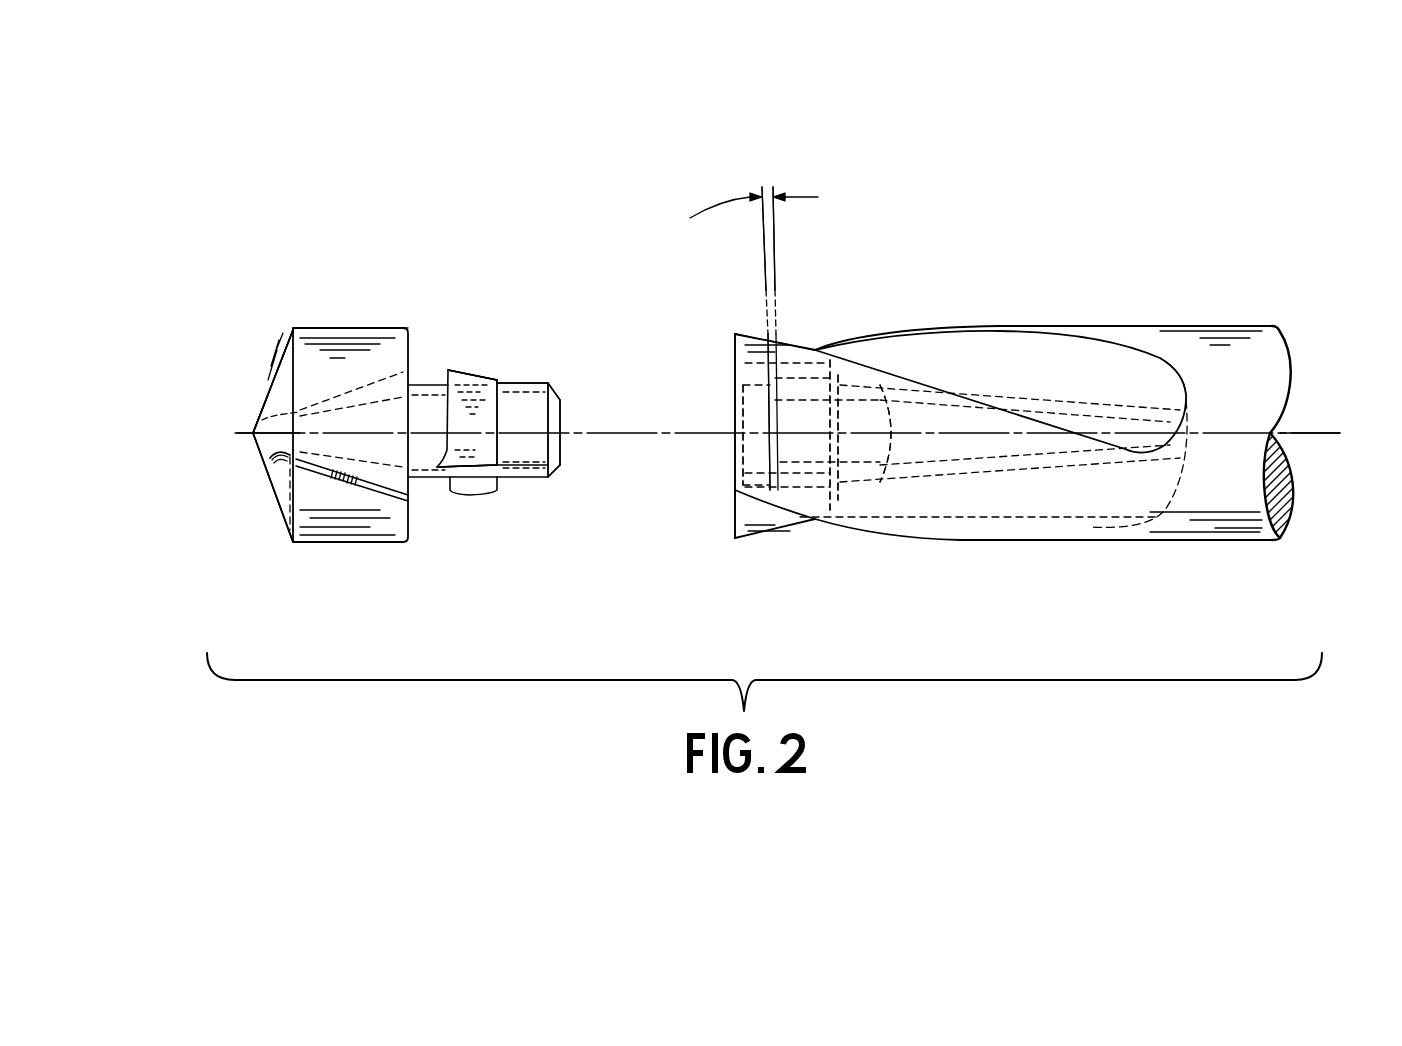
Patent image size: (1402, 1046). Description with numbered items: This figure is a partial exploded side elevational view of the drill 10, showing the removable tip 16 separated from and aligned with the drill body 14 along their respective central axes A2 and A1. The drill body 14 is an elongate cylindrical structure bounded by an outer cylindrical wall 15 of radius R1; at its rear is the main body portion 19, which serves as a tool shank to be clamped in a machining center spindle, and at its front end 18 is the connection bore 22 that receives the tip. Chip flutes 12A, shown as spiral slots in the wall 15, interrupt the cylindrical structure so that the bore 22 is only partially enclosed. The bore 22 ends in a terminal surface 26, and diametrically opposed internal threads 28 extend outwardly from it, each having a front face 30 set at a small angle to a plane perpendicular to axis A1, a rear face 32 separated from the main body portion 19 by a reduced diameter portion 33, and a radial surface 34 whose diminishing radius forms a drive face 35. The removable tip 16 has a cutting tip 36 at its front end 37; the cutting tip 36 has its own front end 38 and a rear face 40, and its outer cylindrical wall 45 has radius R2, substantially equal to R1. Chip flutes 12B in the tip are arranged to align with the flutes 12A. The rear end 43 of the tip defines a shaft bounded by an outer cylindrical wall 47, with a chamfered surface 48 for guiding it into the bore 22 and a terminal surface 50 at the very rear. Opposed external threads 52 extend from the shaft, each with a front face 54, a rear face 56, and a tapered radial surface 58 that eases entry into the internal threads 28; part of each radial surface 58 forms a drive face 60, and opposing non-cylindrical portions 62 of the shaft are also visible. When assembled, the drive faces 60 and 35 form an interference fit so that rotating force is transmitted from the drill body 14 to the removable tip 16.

The drill 10 is at (310, 172).
The chip flutes 12A is at (1042, 370).
The chip flutes 12B is at (262, 332).
The drill body 14 is at (1206, 193).
The outer cylindrical wall 15 is at (1207, 520).
The removable tip 16 is at (270, 243).
The front end 18 is at (724, 546).
The main body portion 19 is at (1260, 310).
The connection bore 22 is at (714, 496).
The terminal surface 26 is at (950, 335).
The internal thread 28 is at (812, 345).
The front face 30 is at (795, 522).
The rear face 32 is at (858, 352).
The reduced diameter portion 33 is at (862, 518).
The radial surface 34 is at (778, 345).
The drive face 35 is at (816, 520).
The cutting tip 36 is at (202, 374).
The front end 37 is at (257, 498).
The front end 38 is at (252, 400).
The rear face 40 is at (416, 383).
The rear end 43 is at (575, 447).
The outer cylindrical wall 45 is at (347, 330).
The outer cylindrical wall 47 is at (513, 382).
The chamfered surface 48 is at (553, 392).
The terminal surface 50 is at (563, 410).
The external thread 52 is at (500, 352).
The front face 54 is at (447, 372).
The rear face 56 is at (498, 382).
The radial surface 58 is at (465, 370).
The drive face 60 is at (467, 490).
The non-cylindrical portions 62 is at (548, 468).
The central axis A1 is at (1300, 420).
The central axis A2 is at (240, 433).
The radius R1 is at (1185, 325).
The radius R2 is at (293, 330).